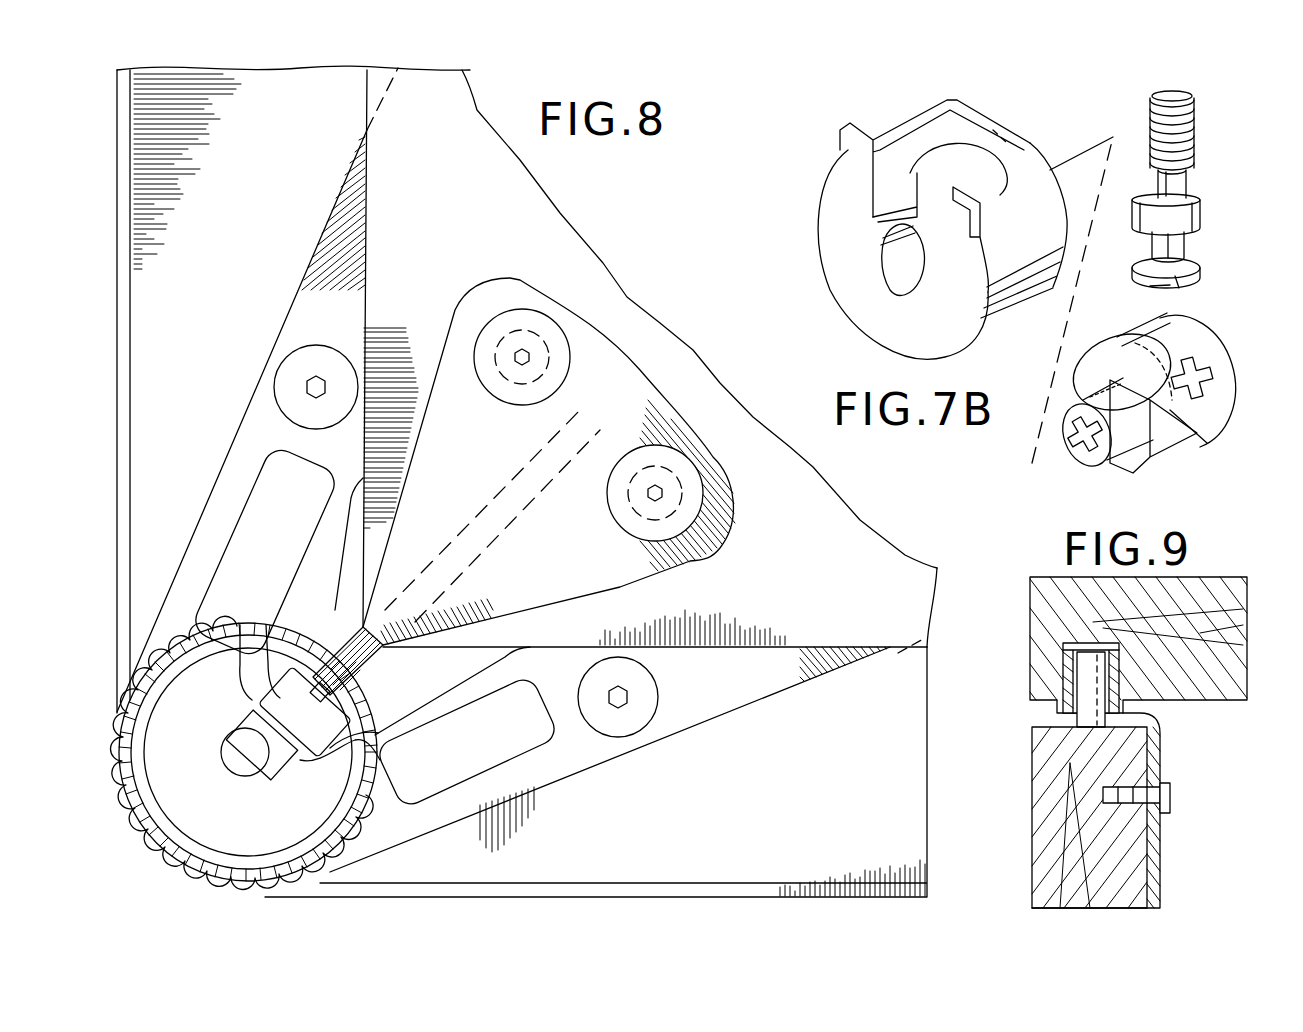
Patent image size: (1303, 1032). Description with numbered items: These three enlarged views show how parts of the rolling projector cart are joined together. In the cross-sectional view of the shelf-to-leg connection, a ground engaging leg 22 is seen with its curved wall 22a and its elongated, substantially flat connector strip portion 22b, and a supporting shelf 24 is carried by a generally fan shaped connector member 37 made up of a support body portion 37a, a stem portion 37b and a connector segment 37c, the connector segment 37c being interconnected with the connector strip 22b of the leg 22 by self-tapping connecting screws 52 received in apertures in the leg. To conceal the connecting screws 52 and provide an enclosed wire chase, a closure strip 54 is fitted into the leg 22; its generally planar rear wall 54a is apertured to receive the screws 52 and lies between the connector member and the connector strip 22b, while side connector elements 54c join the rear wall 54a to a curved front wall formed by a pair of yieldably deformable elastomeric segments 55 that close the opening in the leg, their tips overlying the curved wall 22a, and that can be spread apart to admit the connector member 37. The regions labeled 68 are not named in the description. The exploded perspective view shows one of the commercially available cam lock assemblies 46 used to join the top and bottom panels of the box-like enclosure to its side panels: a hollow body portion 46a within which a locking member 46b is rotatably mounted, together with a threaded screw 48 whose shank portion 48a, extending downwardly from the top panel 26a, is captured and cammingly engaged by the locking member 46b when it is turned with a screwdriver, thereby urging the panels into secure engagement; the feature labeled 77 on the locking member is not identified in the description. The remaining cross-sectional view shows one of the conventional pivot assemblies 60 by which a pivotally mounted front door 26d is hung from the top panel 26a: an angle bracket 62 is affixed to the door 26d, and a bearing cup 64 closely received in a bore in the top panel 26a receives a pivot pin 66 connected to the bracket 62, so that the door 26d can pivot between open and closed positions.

In FIG. 8, the frame member 68 is at (527, 481).
In FIG. 8, the supporting shelf 24 is at (893, 567).
In FIG. 8, the bearing cup 64 is at (741, 698).
In FIG. 9, the bearing cup 64 is at (1067, 667).
In FIG. 8, the fan shaped connector member 37 is at (730, 536).
In FIG. 8, the support body portion 37a is at (567, 580).
In FIG. 8, the stem portion 37b is at (367, 657).
In FIG. 8, the connector segment 37c is at (267, 687).
In FIG. 8, the support member (leg) 22 is at (143, 827).
In FIG. 8, the curved wall 22a is at (357, 827).
In FIG. 8, the connector strip portion 22b is at (300, 753).
In FIG. 8, the closure strip 54 is at (314, 639).
In FIG. 8, the rear wall 54a is at (243, 720).
In FIG. 8, the side connector elements 54c is at (373, 773).
In FIG. 8, the curved segments 55 is at (393, 707).
In FIG. 8, the self-tapping connecting screw 52 is at (247, 752).
In FIG. 7B, the cam lock assembly 46 is at (803, 206).
In FIG. 7B, the hollow body portion 46a is at (1020, 277).
In FIG. 7B, the locking member 46b is at (1180, 453).
In FIG. 7B, the threaded screw 48 is at (1190, 183).
In FIG. 7B, the shank portion 48a is at (1177, 250).
In FIG. 7B, the cross recess 77 is at (1167, 357).
In FIG. 9, the pivot pin 66 is at (1080, 685).
In FIG. 9, the top panel 26a is at (1220, 697).
In FIG. 9, the front door 26d is at (1137, 863).
In FIG. 9, the pivot assembly 60 is at (1163, 775).
In FIG. 9, the angle bracket 62 is at (1153, 820).